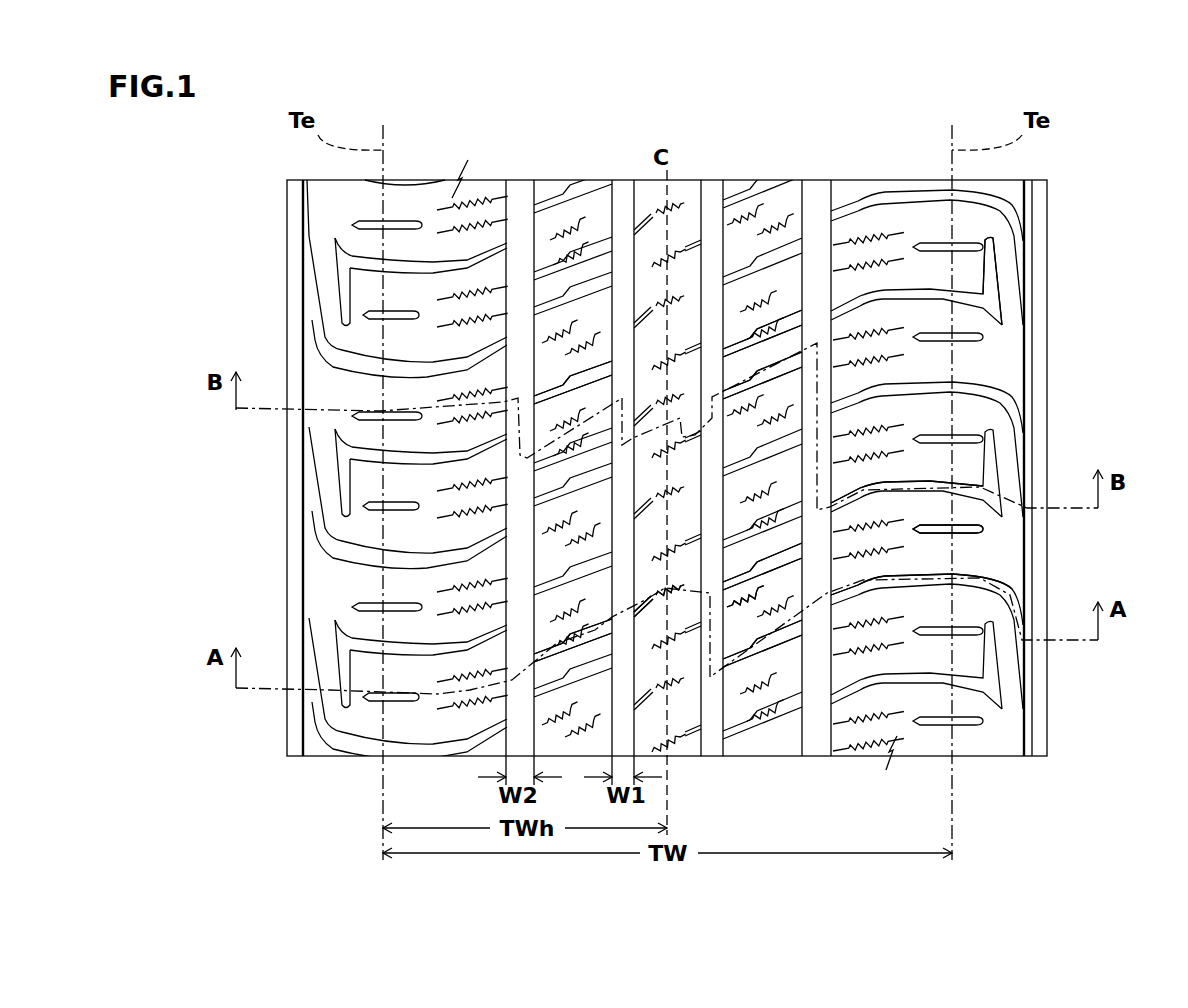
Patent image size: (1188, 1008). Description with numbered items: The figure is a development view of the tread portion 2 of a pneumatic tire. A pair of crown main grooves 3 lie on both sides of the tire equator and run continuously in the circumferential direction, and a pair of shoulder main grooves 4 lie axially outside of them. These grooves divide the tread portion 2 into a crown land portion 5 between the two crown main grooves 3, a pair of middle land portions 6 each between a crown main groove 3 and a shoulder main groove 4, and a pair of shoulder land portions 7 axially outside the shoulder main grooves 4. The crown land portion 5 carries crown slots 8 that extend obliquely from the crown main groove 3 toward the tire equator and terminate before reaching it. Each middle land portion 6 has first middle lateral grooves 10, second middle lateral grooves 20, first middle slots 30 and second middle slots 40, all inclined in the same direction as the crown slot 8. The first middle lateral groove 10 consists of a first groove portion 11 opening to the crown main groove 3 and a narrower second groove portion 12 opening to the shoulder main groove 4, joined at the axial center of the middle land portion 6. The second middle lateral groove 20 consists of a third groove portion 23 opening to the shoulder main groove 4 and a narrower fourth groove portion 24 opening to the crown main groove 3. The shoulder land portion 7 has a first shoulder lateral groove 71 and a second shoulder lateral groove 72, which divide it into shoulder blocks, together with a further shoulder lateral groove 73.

The tread portion 2 is at (1124, 136).
The crown main groove 3 is at (624, 217).
The shoulder main groove 4 is at (517, 217).
The crown land portion 5 is at (691, 207).
The middle land portion 6 is at (569, 224).
The shoulder land portion 7 is at (420, 212).
The crown slot 8 is at (693, 437).
The first middle lateral groove 10 is at (757, 660).
The first groove portion 11 is at (733, 673).
The second groove portion 12 is at (785, 650).
The second middle lateral groove 20 is at (768, 357).
The third groove portion 23 is at (790, 350).
The fourth groove portion 24 is at (757, 382).
The first middle slot 30 is at (547, 657).
The second middle slot 40 is at (597, 405).
The first shoulder lateral groove 71 is at (930, 583).
The second shoulder lateral groove 72 is at (912, 493).
The shoulder lateral groove 73 is at (943, 530).